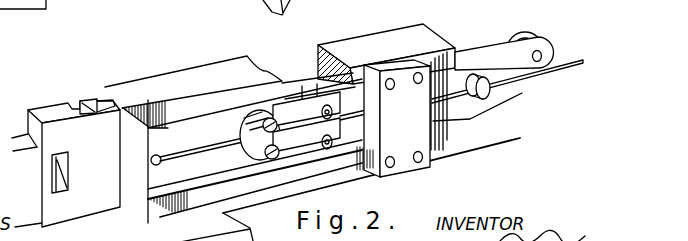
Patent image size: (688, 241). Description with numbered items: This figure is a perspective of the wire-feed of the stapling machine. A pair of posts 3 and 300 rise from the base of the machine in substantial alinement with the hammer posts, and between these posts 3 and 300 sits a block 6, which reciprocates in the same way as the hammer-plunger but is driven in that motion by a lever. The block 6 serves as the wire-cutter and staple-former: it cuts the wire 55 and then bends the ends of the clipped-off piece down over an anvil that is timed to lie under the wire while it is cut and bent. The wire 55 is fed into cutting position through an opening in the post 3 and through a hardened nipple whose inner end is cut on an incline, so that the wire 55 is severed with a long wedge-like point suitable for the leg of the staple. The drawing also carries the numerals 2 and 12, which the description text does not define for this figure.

The arm 2 is at (482, 65).
The post 3 is at (145, 146).
The block 6 is at (74, 164).
The wedge block 12 is at (116, 62).
The wire 55 is at (553, 72).
The post 300 is at (20, 155).